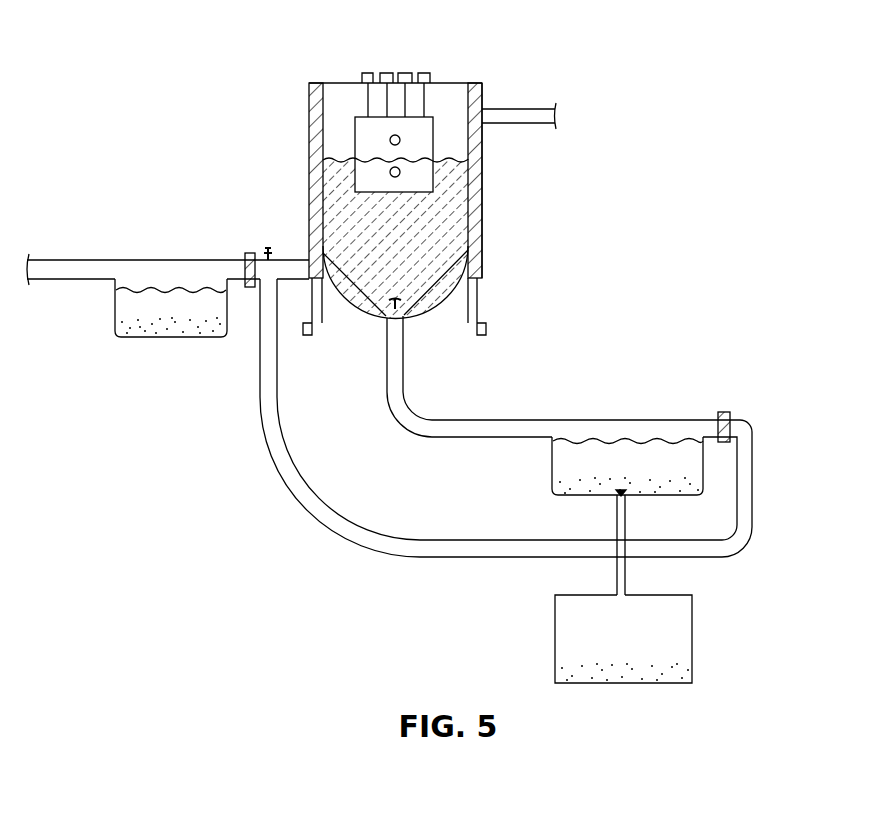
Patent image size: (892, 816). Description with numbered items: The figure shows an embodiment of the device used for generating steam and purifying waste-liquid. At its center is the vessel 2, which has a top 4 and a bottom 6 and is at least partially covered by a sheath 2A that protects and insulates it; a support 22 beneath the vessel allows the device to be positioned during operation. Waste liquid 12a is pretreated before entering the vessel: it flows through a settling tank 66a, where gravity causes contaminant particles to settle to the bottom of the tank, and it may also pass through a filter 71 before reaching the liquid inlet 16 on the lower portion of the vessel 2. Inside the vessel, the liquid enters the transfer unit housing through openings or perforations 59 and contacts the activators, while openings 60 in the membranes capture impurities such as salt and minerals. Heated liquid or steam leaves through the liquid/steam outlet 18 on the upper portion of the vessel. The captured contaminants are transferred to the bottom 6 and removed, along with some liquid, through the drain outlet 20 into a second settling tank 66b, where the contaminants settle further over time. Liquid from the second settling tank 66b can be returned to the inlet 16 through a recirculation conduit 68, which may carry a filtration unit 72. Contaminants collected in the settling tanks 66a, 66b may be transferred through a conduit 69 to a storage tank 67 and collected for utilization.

The top 4 is at (478, 50).
The vessel 2 is at (470, 135).
The sheath 2A is at (487, 239).
The waste liquid 12a is at (468, 208).
The liquid/steam outlet 18 is at (524, 97).
The openings 60 is at (421, 135).
The openings or perforations 59 is at (387, 140).
The bottom 6 is at (352, 305).
The drain outlet 20 is at (378, 327).
The support 22 is at (490, 312).
The liquid inlet 16 is at (287, 250).
The filter 71 is at (238, 246).
The settling tank 66a is at (146, 350).
The second settling tank 66b is at (540, 470).
The recirculation conduit 68 is at (761, 486).
The filtration unit 72 is at (737, 400).
The conduit 69 is at (636, 578).
The storage tank 67 is at (702, 636).